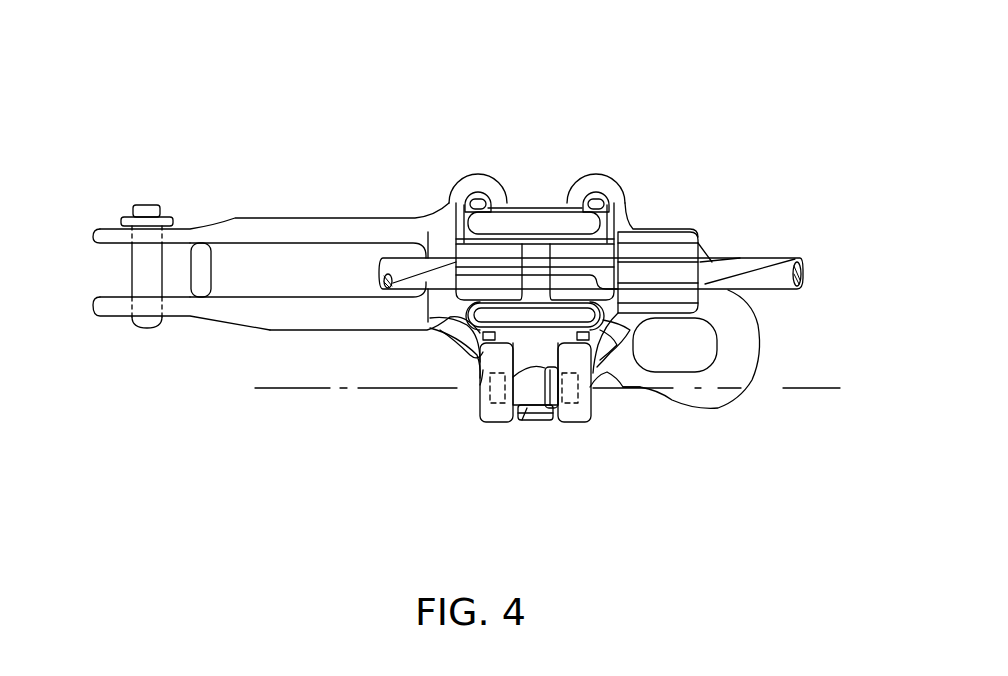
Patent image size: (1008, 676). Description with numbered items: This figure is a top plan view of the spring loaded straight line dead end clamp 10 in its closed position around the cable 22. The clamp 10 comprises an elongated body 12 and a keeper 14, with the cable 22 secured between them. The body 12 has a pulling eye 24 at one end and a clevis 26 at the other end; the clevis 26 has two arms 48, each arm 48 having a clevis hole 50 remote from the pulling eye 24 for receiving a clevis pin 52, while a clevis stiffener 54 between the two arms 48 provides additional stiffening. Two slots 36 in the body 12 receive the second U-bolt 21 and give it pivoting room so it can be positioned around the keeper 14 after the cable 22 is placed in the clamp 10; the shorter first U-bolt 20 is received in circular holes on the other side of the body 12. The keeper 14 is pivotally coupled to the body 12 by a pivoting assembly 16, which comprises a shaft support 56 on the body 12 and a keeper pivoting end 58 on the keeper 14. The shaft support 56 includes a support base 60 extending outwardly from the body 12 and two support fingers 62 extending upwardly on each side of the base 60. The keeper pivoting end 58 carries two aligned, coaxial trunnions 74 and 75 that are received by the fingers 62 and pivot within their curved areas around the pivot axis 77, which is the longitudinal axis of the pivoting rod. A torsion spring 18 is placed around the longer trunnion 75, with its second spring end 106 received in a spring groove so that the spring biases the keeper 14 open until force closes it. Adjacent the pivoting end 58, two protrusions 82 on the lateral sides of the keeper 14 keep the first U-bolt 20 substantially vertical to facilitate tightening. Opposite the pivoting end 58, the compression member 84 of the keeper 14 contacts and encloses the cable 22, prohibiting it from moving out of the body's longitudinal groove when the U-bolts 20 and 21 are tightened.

The spring loaded straight line dead end clamp 10 is at (183, 152).
The body 12 is at (285, 213).
The keeper 14 is at (660, 228).
The pivoting assembly 16 is at (472, 418).
The torsion spring 18 is at (559, 428).
The first U-bolt 20 is at (460, 320).
The second U-bolt 21 is at (537, 223).
The cable 22 is at (783, 247).
The pulling eye 24 is at (715, 340).
The clevis 26 is at (243, 330).
The slots 36 is at (450, 200).
The clevis arms 48 is at (327, 299).
The clevis hole 50 is at (178, 233).
The clevis pin 52 is at (132, 271).
The clevis stiffener 54 is at (198, 270).
The shaft support 56 is at (500, 433).
The keeper pivoting end 58 is at (525, 414).
The support base 60 is at (523, 418).
The support fingers 62 is at (473, 397).
The trunnion 74 is at (487, 423).
The longer trunnion 75 is at (575, 425).
The pivot axis 77 is at (297, 390).
The protrusions 82 is at (480, 363).
The compression member 84 is at (690, 254).
The second spring end 106 is at (483, 370).